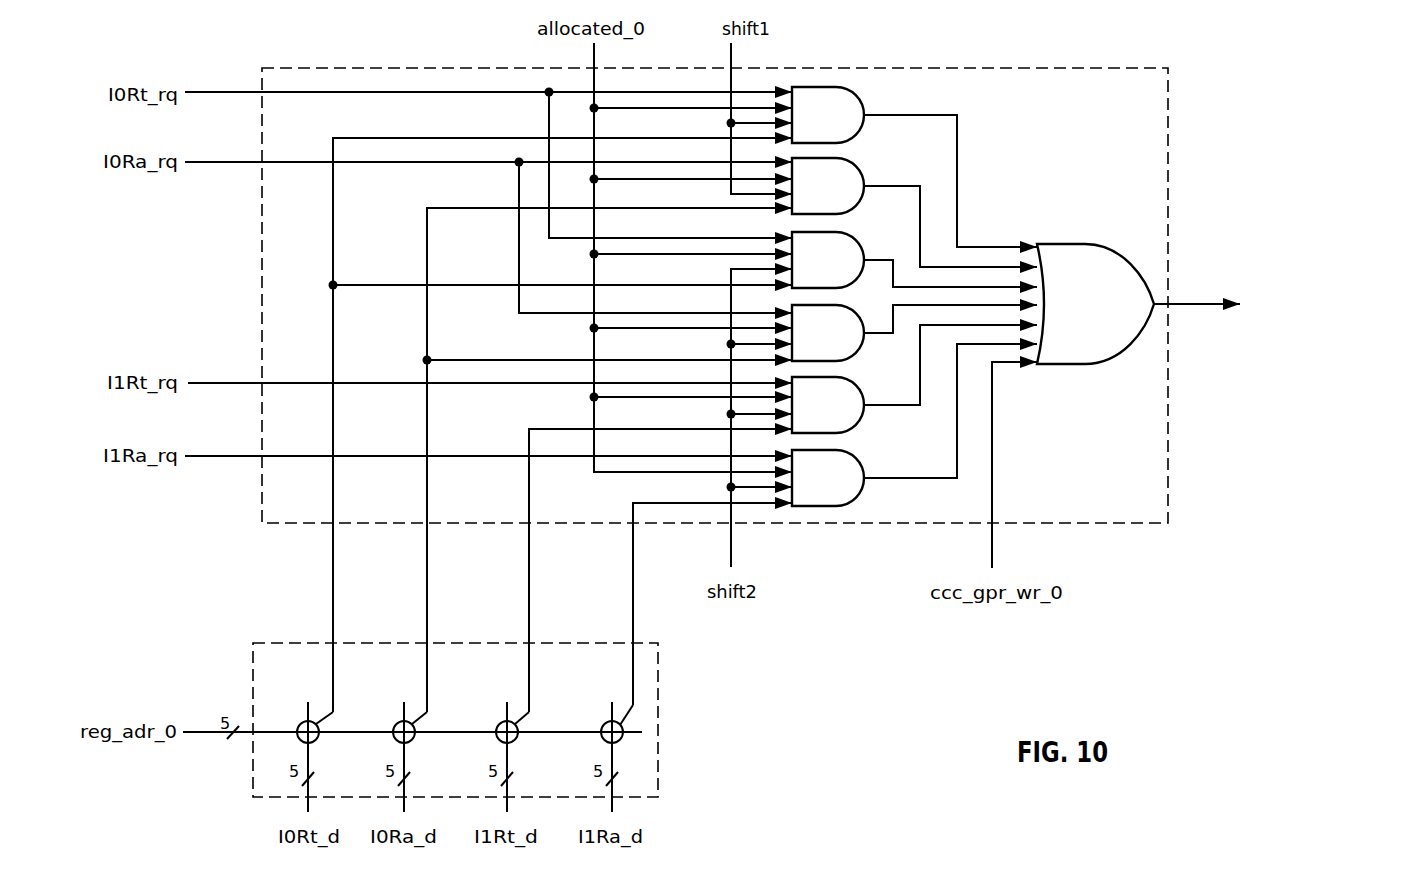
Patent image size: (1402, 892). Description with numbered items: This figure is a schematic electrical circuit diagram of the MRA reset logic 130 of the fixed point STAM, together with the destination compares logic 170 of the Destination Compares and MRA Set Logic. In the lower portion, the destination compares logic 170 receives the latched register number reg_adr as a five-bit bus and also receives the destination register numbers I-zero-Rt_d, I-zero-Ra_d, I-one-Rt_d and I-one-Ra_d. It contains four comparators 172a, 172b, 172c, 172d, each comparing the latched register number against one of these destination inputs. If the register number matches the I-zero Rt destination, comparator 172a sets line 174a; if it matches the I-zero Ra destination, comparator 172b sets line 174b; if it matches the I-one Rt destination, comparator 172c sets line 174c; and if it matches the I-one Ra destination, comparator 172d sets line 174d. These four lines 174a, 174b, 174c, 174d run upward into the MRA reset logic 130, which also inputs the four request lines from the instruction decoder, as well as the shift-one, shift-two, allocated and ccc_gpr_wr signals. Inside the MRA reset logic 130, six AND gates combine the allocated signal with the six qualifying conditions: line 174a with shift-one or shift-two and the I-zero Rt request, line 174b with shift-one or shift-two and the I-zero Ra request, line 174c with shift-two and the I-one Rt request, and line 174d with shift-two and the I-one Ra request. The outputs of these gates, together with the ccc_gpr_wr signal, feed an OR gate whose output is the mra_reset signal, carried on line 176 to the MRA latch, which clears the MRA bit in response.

The MRA reset logic 130 is at (1168, 149).
The destination compares logic 170 is at (658, 705).
The comparator 172a is at (302, 723).
The comparator 172b is at (397, 723).
The comparator 172c is at (500, 723).
The comparator 172d is at (603, 723).
The line 174a is at (329, 629).
The line 174b is at (425, 629).
The line 174c is at (527, 629).
The line 174d is at (631, 630).
The line 176 is at (1195, 305).